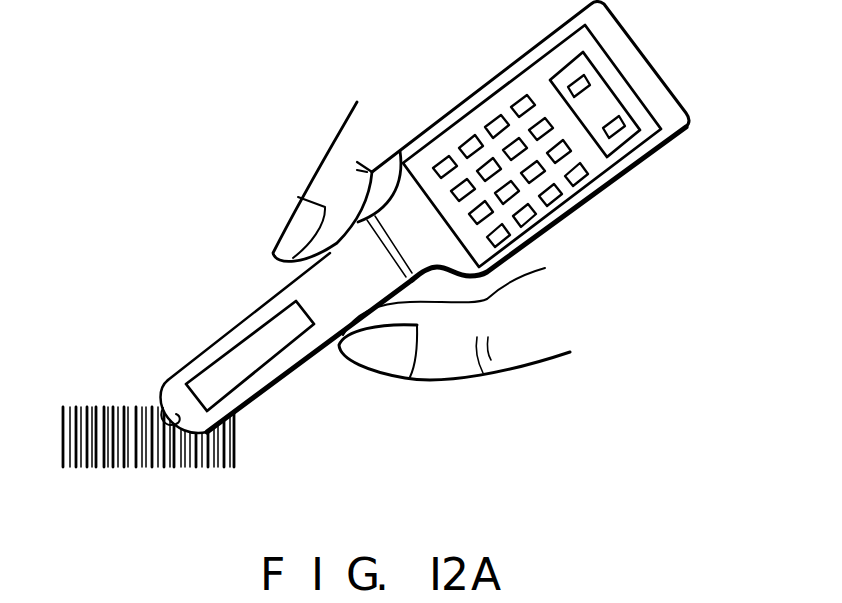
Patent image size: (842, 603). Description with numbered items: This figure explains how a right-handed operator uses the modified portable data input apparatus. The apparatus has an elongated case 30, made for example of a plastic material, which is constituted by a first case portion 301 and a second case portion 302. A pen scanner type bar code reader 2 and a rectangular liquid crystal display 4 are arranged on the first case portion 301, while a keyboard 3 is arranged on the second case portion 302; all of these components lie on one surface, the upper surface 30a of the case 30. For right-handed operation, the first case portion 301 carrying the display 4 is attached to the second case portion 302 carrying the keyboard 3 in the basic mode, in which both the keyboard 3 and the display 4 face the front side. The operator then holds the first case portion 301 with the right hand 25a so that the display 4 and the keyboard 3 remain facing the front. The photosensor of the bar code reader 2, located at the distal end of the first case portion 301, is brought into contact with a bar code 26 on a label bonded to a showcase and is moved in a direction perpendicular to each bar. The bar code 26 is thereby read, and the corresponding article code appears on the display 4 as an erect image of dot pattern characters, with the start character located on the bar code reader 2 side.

The bar code reader 2 is at (181, 430).
The keyboard 3 is at (530, 80).
The display 4 is at (262, 336).
The right hand 25a is at (543, 352).
The bar code 26 is at (93, 406).
The case 30 is at (442, 259).
The upper surface 30a is at (453, 125).
The first case portion 301 is at (287, 366).
The second case portion 302 is at (536, 141).